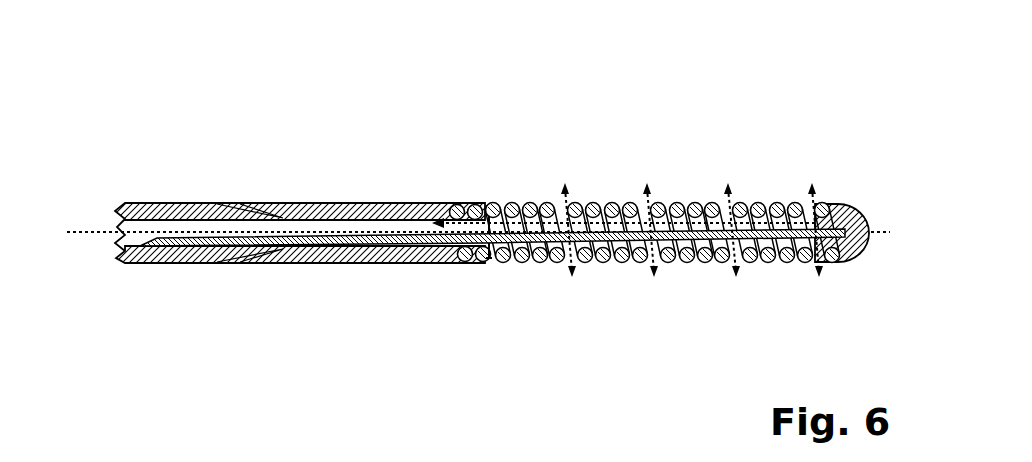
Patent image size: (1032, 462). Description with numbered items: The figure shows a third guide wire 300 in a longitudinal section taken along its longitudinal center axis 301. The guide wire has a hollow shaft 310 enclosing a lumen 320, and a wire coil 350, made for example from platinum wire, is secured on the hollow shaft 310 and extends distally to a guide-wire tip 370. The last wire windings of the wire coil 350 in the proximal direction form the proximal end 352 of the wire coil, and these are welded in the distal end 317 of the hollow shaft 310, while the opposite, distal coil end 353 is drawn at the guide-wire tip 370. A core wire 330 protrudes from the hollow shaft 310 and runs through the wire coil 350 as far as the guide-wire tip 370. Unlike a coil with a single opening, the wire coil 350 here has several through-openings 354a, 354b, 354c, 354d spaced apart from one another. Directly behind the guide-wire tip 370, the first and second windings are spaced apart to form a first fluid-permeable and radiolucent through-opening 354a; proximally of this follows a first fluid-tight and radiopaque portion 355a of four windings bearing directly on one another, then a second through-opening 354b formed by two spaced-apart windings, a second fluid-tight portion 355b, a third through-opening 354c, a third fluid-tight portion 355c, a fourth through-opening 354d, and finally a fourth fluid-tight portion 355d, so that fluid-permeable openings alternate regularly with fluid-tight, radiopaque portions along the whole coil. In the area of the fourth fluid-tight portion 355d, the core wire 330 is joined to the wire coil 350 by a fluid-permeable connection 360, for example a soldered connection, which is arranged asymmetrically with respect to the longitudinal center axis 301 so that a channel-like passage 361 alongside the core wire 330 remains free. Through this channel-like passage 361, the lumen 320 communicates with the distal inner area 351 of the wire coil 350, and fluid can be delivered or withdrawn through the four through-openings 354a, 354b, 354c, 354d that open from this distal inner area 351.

The third guide wire 300 is at (467, 215).
The longitudinal center axis 301 is at (88, 232).
The hollow shaft 310 is at (300, 245).
The distal end of the hollow shaft 317 is at (445, 262).
The lumen 320 is at (300, 212).
The core wire 330 is at (412, 236).
The wire coil 350 is at (637, 206).
The distal inner area of the wire coil 351 is at (766, 262).
The proximal end of the wire coil 352 is at (458, 262).
The distal coil end 353 is at (835, 262).
The first fluid-permeable through-opening 354a is at (806, 204).
The second fluid-permeable through-opening 354b is at (722, 204).
The third fluid-permeable through-opening 354c is at (640, 204).
The fourth fluid-permeable through-opening 354d is at (558, 204).
The first fluid-tight portion 355a is at (773, 194).
The second fluid-tight portion 355b is at (677, 204).
The third fluid-tight portion 355c is at (593, 204).
The fourth fluid-tight portion 355d is at (505, 204).
The fluid-permeable connection 360 is at (553, 250).
The channel-like passage 361 is at (488, 208).
The guide-wire tip 370 is at (855, 260).